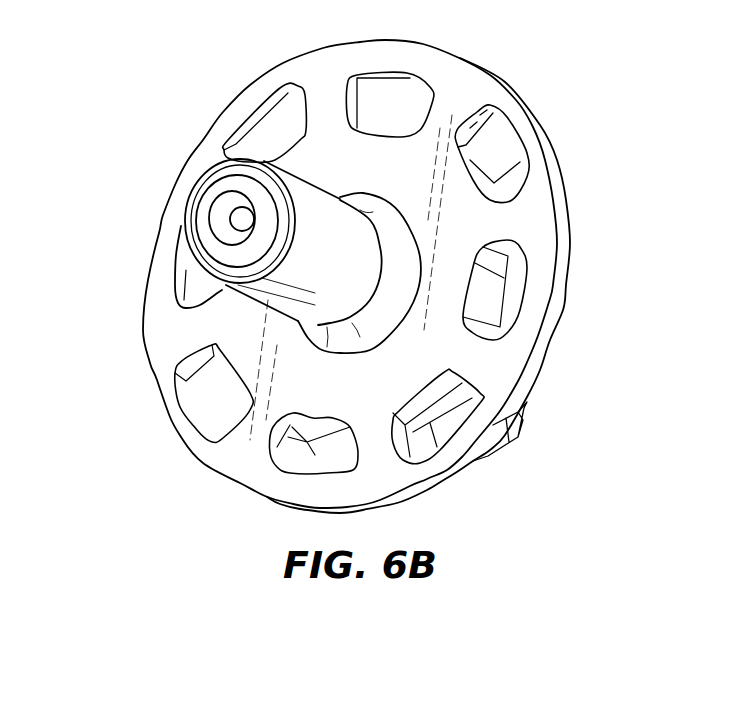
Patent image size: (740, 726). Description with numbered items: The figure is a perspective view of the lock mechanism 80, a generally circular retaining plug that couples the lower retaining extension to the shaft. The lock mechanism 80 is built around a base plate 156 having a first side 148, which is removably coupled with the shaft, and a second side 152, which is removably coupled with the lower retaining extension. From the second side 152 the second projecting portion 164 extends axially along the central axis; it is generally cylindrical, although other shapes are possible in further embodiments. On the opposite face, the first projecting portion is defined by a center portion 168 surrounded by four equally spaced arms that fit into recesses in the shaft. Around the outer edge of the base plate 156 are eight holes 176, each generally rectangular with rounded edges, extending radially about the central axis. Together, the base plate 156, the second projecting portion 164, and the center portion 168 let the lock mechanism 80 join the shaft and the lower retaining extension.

The lock mechanism 80 is at (346, 260).
The first side 148 is at (598, 268).
The second side 152 is at (103, 355).
The base plate 156 is at (262, 95).
The second projecting portion 164 is at (168, 240).
The center portion 168 is at (212, 193).
The holes 176 is at (398, 105).